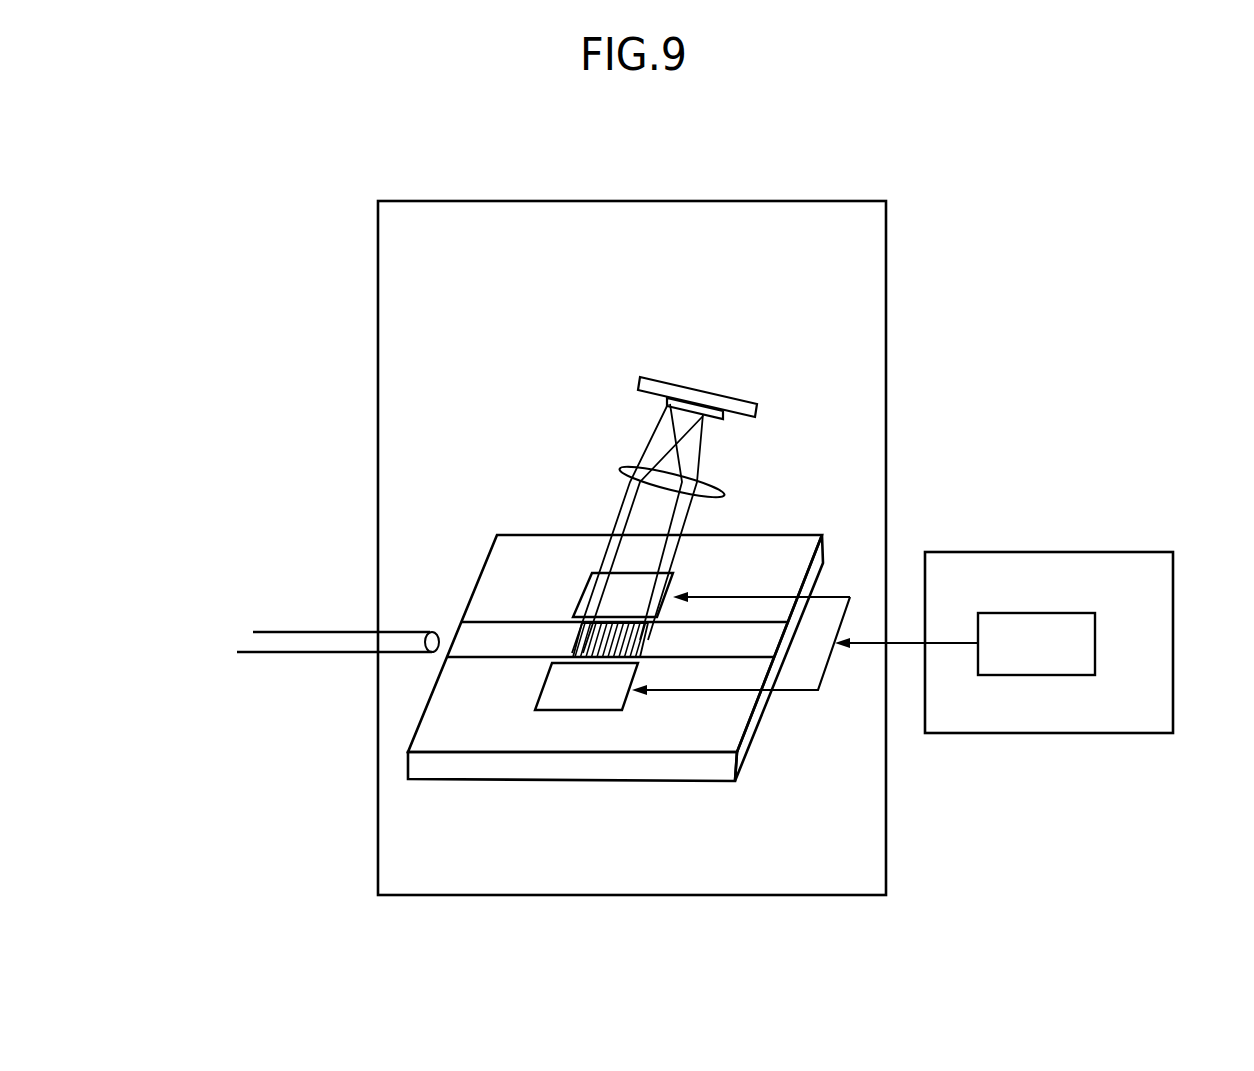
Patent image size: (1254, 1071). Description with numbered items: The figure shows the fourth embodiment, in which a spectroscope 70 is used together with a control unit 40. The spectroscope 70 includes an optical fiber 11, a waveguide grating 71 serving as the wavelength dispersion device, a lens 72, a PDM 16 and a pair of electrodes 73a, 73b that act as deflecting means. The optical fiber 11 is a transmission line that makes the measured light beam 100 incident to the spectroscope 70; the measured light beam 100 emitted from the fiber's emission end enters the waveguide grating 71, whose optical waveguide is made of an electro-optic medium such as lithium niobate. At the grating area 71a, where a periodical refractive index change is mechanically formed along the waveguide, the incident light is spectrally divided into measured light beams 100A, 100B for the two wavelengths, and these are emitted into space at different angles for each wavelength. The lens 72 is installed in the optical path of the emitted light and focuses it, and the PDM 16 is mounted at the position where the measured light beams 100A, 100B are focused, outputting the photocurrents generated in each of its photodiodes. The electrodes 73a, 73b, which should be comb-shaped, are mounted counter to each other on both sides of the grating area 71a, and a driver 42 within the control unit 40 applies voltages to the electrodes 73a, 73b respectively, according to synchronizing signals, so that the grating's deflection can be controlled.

The spectroscope 70 is at (638, 202).
The PDM 16 is at (715, 390).
The lens 72 is at (717, 490).
The measured light beam 100A is at (647, 437).
The measured light beam 100B is at (700, 443).
The waveguide grating 71 is at (702, 783).
The grating area 71a is at (620, 647).
The electrode 73a is at (585, 585).
The electrode 73b is at (580, 690).
The optical fiber 11 is at (283, 632).
The measured light beam 100 is at (445, 646).
The control unit 40 is at (1047, 552).
The driver 42 is at (1098, 631).